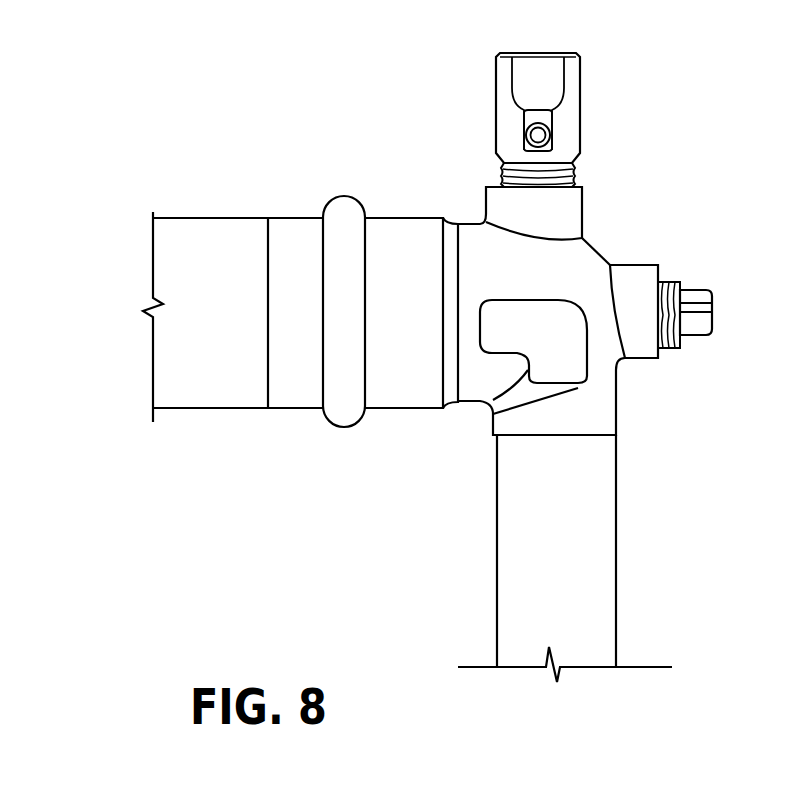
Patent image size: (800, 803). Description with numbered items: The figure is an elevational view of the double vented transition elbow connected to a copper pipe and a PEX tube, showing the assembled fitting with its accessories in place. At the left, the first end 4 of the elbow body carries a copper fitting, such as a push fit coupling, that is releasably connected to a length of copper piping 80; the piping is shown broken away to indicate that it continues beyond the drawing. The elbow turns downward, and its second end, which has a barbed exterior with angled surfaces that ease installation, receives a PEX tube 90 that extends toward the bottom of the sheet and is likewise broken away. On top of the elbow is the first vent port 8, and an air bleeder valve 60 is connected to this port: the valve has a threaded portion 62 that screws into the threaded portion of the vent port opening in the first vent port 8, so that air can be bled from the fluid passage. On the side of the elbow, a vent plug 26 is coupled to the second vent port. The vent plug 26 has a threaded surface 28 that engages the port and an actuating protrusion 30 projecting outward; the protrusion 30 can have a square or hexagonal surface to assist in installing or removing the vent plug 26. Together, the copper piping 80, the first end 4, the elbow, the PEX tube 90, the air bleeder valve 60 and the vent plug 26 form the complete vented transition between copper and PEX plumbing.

The first end 4 is at (381, 233).
The first vent port 8 is at (556, 211).
The vent plug 26 is at (682, 338).
The threaded surface 28 is at (668, 282).
The actuating protrusion 30 is at (696, 318).
The air bleeder valve 60 is at (582, 115).
The threaded portion 62 is at (575, 176).
The copper piping 80 is at (218, 245).
The PEX tube 90 is at (525, 509).